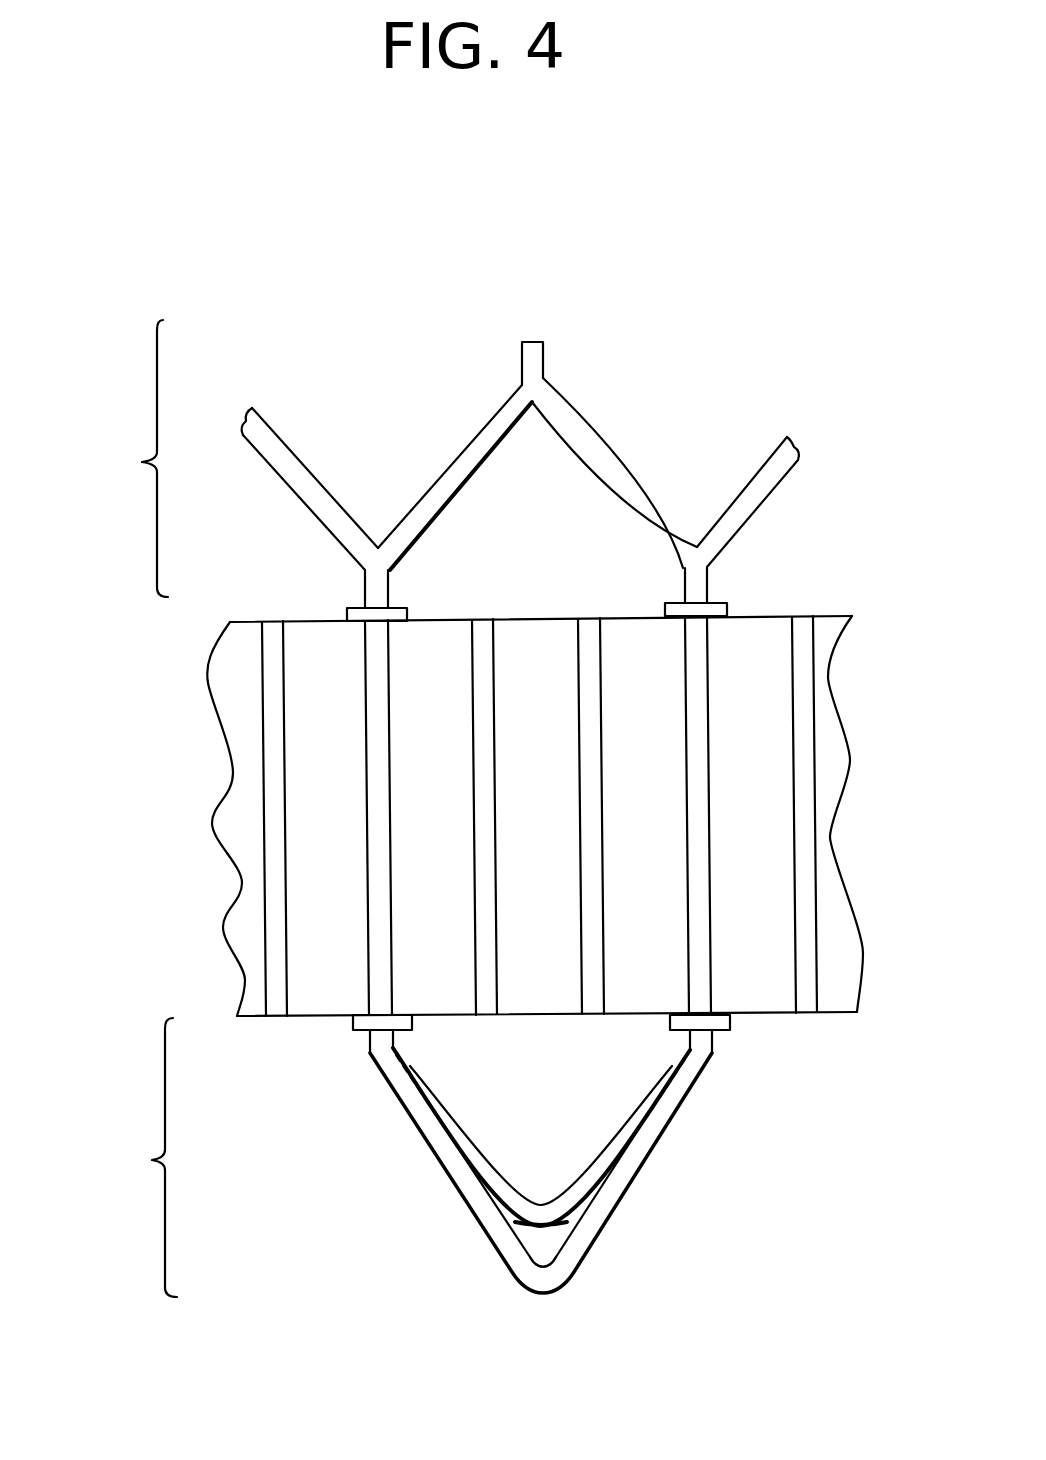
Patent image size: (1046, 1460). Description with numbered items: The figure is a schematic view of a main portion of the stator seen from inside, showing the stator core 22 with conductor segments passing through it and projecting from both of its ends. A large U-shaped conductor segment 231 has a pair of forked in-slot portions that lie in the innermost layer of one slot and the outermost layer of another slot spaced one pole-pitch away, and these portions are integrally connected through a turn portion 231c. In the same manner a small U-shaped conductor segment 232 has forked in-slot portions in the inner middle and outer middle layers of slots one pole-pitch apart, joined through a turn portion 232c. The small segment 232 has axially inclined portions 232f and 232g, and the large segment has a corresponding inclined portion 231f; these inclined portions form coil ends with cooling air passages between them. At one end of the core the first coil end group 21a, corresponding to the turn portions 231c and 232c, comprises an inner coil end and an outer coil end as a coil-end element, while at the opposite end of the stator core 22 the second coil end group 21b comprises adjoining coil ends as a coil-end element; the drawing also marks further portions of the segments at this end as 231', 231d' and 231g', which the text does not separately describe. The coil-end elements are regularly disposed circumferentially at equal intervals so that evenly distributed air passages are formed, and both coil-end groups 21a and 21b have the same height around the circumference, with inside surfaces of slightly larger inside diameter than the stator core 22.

The first coil end group 21a is at (129, 1157).
The second coil end group 21b is at (121, 458).
The stator core 22 is at (762, 1000).
The large U-shaped conductor segment 231 is at (558, 850).
The bent portion of first electrode strip 231' is at (616, 436).
The turn portion 231c is at (527, 1275).
The apex end of first electrode strip 231d' is at (560, 285).
The inclined portion 231f is at (427, 1145).
The edge of first electrode strip 231g' is at (401, 435).
The small U-shaped conductor segment 232 is at (583, 1153).
The turn portion 232c is at (535, 1212).
The inclined portion 232f is at (487, 1168).
The inclined portion 232g is at (455, 473).